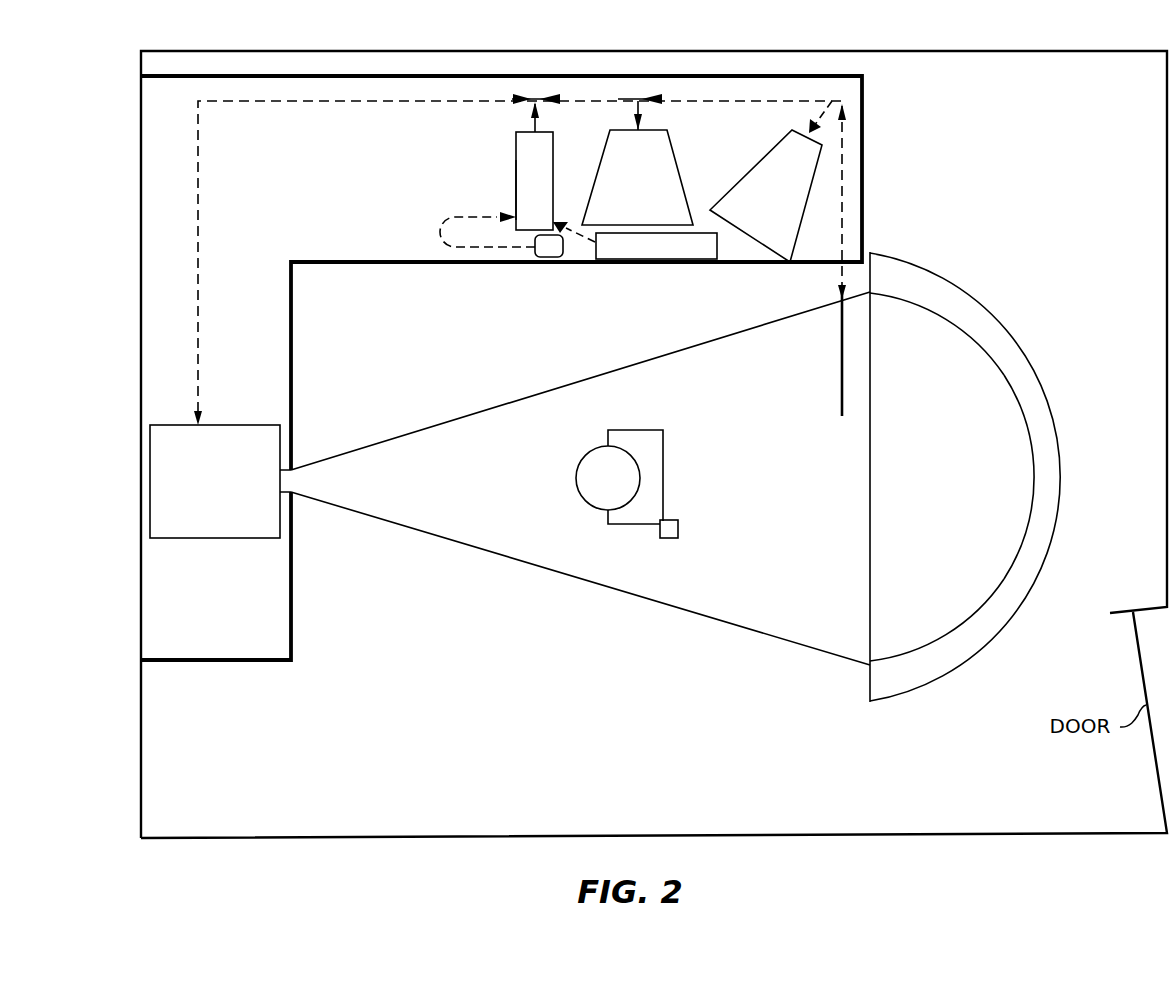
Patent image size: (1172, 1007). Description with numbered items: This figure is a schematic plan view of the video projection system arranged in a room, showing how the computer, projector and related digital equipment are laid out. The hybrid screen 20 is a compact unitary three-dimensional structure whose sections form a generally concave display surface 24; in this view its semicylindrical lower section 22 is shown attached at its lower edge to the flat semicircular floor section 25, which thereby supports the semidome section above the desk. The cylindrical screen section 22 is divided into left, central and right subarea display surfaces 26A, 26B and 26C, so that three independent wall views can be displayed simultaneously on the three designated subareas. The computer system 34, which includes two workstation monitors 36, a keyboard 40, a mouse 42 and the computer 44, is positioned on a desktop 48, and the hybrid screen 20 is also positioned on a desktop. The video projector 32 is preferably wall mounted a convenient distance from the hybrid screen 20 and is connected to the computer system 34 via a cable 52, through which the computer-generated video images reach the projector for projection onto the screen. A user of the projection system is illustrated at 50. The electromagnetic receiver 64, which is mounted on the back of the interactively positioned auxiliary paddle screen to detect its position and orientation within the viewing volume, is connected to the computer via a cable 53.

The hybrid screen 20 is at (1034, 296).
The semicylindrical lower section 22 is at (1056, 434).
The concave display surface 24 is at (938, 546).
The flat semicircular floor section 25 is at (949, 440).
The left subarea display surface 26A is at (931, 312).
The central subarea display surface 26B is at (1018, 470).
The right subarea display surface 26C is at (931, 637).
The image projector 32 is at (242, 425).
The computer system 34 is at (484, 168).
The workstation monitors 36 is at (757, 160).
The keyboard 40 is at (660, 261).
The mouse 42 is at (534, 258).
The computer 44 is at (516, 197).
The desktop 48 is at (336, 264).
The user 50 is at (577, 477).
The cable 52 is at (272, 102).
The cable 53 is at (843, 203).
The electromagnetic receiver 64 is at (842, 383).